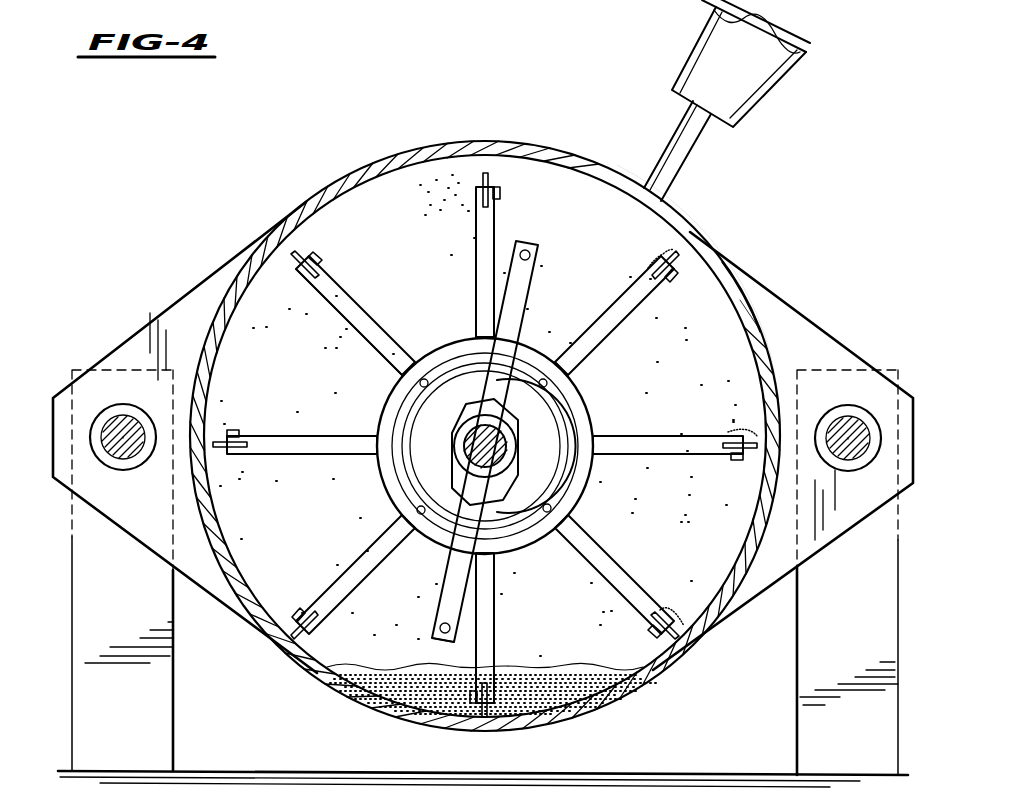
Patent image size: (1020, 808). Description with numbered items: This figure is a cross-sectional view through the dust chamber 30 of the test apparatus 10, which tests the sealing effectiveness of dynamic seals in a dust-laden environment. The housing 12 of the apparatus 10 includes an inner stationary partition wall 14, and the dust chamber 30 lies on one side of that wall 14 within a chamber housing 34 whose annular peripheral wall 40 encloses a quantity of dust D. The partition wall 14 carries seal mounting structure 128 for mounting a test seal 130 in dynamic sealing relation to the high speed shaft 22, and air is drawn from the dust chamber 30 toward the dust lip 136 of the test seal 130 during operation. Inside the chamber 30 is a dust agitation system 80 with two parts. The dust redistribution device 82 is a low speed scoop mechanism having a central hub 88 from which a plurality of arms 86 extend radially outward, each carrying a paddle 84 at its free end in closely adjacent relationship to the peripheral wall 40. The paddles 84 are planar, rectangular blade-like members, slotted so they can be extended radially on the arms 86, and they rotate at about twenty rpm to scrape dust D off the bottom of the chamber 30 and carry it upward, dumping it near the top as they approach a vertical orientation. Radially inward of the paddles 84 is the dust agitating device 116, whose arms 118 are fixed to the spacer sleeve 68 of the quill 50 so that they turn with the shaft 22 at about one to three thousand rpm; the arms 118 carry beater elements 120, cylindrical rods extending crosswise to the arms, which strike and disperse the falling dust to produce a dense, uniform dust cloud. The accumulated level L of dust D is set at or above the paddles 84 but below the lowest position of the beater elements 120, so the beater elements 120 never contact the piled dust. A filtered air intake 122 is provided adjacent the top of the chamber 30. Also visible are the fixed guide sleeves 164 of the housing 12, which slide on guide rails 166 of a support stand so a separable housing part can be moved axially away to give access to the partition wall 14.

The test apparatus 10 is at (182, 155).
The housing 12 is at (348, 164).
The partition wall 14 is at (425, 196).
The shaft 22 is at (500, 525).
The dust chamber 30 is at (598, 160).
The chamber housing 34 is at (712, 262).
The peripheral wall 40 is at (763, 348).
The quill 50 is at (478, 452).
The spacer sleeve 68 is at (472, 446).
The dust agitation system 80 is at (280, 278).
The dust redistribution device 82 is at (275, 414).
The paddles 84 is at (303, 250).
The arms 86 is at (322, 436).
The central hub 88 is at (540, 362).
The dust agitating device 116 is at (558, 266).
The arms 118 is at (535, 302).
The beater elements 120 is at (437, 640).
The filtered air intake 122 is at (760, 70).
The seal mounting structure 128 is at (532, 250).
The test seal 130 is at (565, 482).
The dust lip 136 is at (781, 290).
The guide sleeves 164 is at (125, 404).
The guide rails 166 is at (125, 462).
The accumulated level L is at (406, 668).
The dust D is at (597, 686).